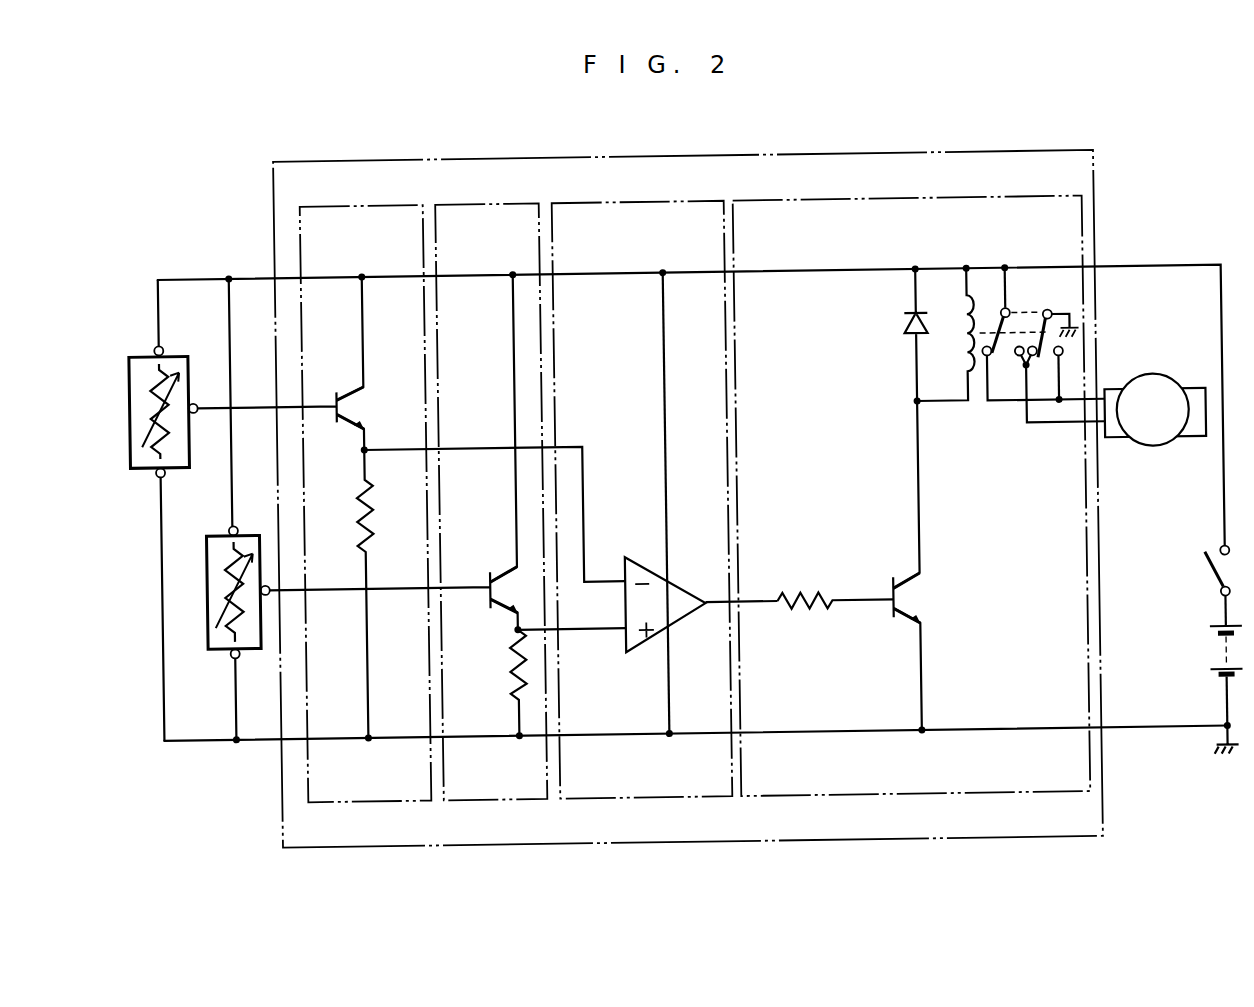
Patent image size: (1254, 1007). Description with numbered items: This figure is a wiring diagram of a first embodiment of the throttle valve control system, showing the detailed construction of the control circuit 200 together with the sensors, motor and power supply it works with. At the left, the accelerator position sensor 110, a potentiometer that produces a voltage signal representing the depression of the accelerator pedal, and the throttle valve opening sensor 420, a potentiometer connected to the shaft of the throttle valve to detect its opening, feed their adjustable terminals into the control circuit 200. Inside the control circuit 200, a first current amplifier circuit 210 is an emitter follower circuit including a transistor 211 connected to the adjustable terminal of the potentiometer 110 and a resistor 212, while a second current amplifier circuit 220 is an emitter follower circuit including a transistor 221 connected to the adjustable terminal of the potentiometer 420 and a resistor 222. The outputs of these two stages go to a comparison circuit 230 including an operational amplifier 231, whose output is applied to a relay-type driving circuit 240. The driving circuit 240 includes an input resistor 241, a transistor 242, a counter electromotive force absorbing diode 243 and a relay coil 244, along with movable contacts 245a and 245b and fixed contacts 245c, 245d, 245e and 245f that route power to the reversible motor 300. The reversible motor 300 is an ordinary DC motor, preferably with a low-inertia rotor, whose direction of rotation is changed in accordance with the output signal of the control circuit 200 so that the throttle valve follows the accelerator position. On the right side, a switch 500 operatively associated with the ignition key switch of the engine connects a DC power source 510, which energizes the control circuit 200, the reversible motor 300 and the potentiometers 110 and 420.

The accelerator position sensor 110 is at (130, 350).
The control circuit 200 is at (992, 156).
The current amplifier circuit 210 is at (325, 201).
The current amplifier circuit 220 is at (464, 202).
The comparison circuit 230 is at (614, 204).
The relay-type driving circuit 240 is at (870, 204).
The transistor 211 is at (354, 381).
The resistor 212 is at (355, 503).
The transistor 221 is at (501, 571).
The resistor 222 is at (508, 662).
The operational amplifier 231 is at (644, 560).
The input resistor 241 is at (807, 594).
The transistor 242 is at (911, 602).
The counter electromotive force absorbing diode 243 is at (907, 332).
The relay coil 244 is at (966, 310).
The movable contact 245a is at (1006, 313).
The movable contact 245b is at (1050, 314).
The fixed contact 245c is at (989, 362).
The fixed contact 245d is at (1021, 360).
The fixed contact 245e is at (1066, 362).
The fixed contact 245f is at (1065, 352).
The reversible motor 300 is at (1151, 455).
The throttle valve opening sensor 420 is at (216, 530).
The switch 500 is at (1204, 578).
The DC power source 510 is at (1213, 659).